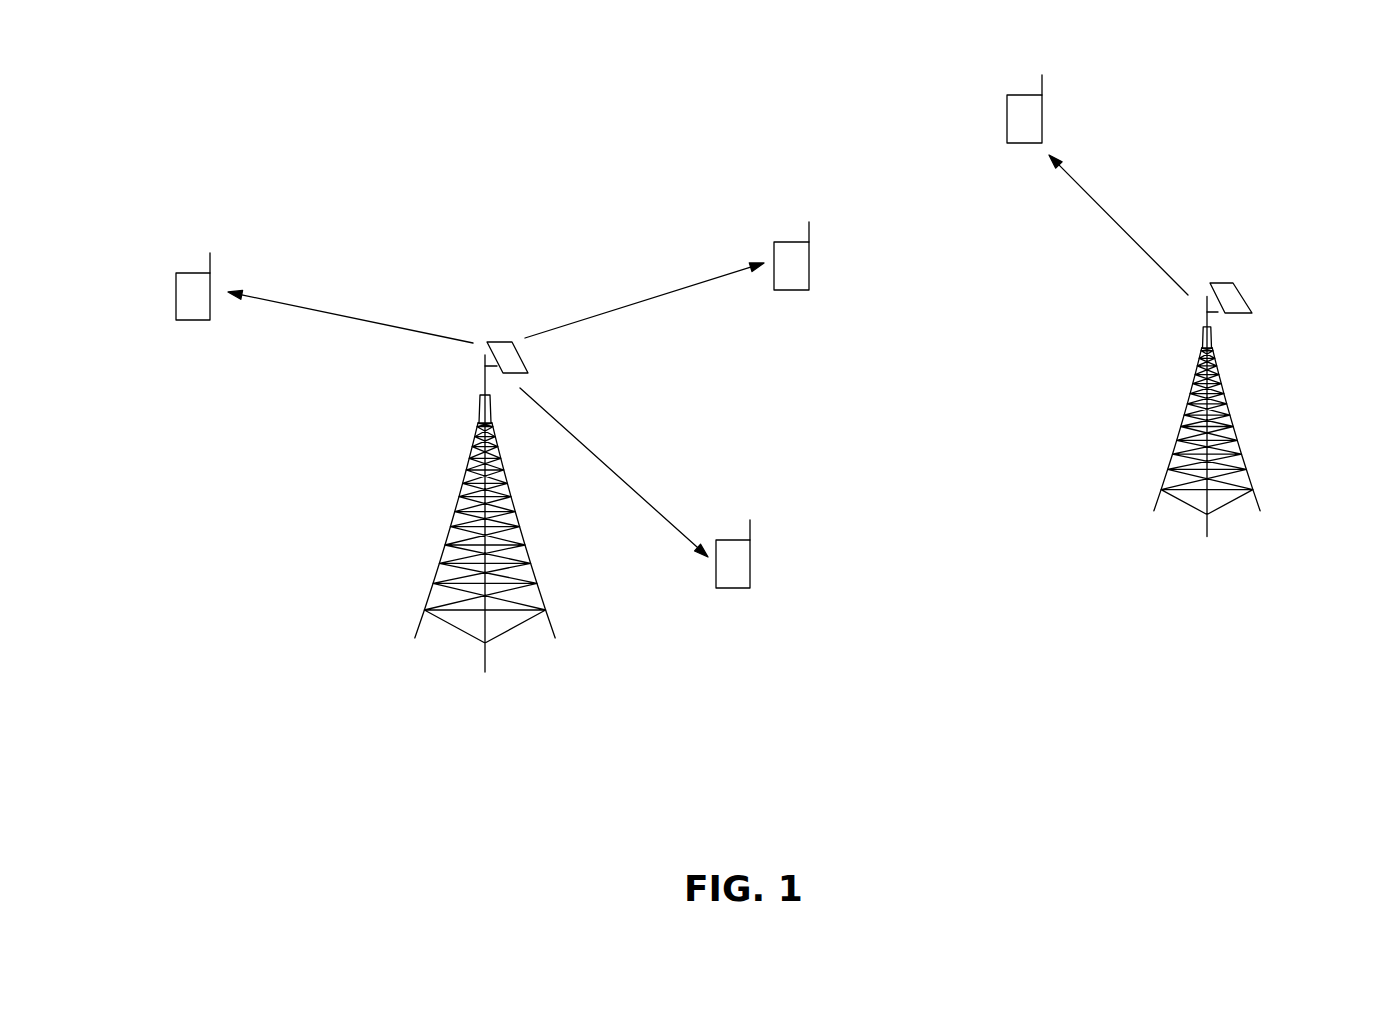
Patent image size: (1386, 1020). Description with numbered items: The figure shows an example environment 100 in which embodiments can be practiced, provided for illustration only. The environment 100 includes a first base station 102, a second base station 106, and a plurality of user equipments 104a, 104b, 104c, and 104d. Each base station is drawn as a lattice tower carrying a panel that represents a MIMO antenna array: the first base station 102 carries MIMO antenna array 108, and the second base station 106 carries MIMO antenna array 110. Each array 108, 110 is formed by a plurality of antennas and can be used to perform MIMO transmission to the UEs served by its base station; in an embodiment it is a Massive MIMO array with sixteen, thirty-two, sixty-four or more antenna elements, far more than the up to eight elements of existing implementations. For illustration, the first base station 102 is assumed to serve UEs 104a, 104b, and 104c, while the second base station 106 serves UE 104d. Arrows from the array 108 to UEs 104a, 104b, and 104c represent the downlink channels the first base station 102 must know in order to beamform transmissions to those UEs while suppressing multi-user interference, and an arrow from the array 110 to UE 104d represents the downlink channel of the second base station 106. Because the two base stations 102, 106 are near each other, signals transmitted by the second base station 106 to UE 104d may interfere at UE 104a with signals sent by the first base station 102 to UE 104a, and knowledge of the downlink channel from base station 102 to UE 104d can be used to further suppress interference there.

The example environment 100 is at (1366, 72).
The first base station 102 is at (461, 496).
The user equipment 104a is at (809, 265).
The user equipment 104b is at (750, 566).
The user equipment 104c is at (176, 293).
The user equipment 104d is at (1042, 112).
The second base station 106 is at (1183, 426).
The MIMO antenna array 108 is at (529, 360).
The MIMO antenna array 110 is at (1245, 313).